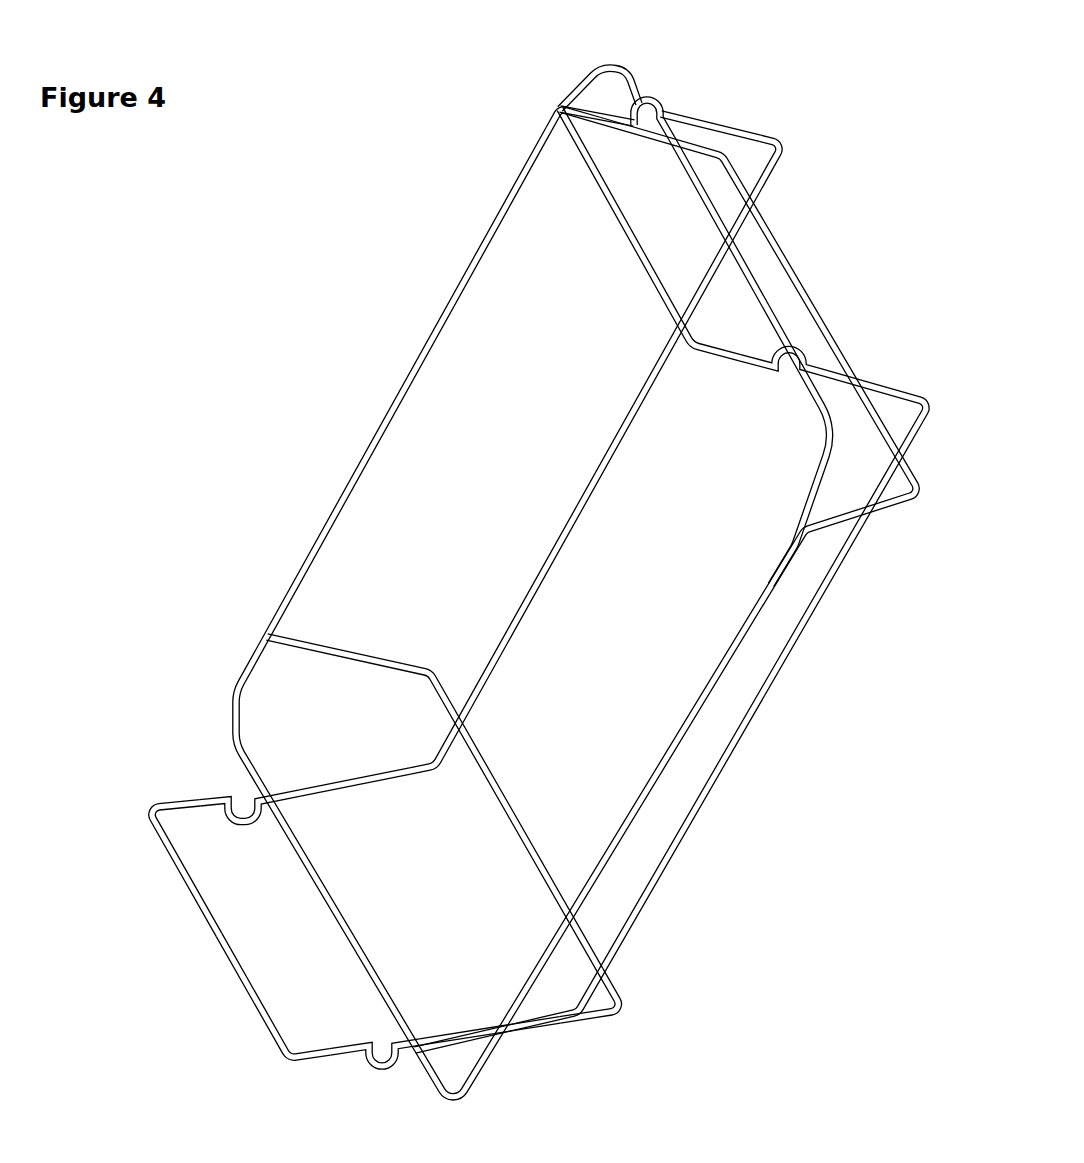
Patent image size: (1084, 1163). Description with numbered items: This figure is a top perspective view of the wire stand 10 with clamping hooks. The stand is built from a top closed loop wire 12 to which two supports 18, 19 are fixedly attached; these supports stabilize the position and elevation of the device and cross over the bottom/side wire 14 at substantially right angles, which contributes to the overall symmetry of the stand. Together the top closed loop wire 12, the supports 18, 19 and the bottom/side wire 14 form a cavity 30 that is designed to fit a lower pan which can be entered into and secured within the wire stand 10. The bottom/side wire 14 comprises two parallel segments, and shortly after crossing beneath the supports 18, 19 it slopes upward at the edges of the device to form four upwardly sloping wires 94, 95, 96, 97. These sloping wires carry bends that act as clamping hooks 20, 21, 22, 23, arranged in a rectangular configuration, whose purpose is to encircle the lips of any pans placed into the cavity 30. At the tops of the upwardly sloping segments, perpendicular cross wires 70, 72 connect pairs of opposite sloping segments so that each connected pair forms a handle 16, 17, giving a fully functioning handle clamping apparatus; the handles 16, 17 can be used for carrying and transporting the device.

The wire stand 10 is at (728, 128).
The top closed loop wire 12 is at (611, 68).
The bottom/side wire 14 is at (907, 383).
The handle 16 is at (558, 118).
The handle 17 is at (193, 893).
The support 18 is at (787, 243).
The support 19 is at (598, 1026).
The clamping hook 20 is at (655, 100).
The clamping hook 21 is at (798, 350).
The clamping hook 22 is at (243, 806).
The clamping hook 23 is at (377, 1068).
The cavity 30 is at (440, 417).
The cross wire 70 is at (600, 192).
The cross wire 72 is at (210, 933).
The upwardly sloping wire 94 is at (771, 141).
The upwardly sloping wire 95 is at (873, 377).
The upwardly sloping wire 96 is at (333, 783).
The upwardly sloping wire 97 is at (458, 1042).